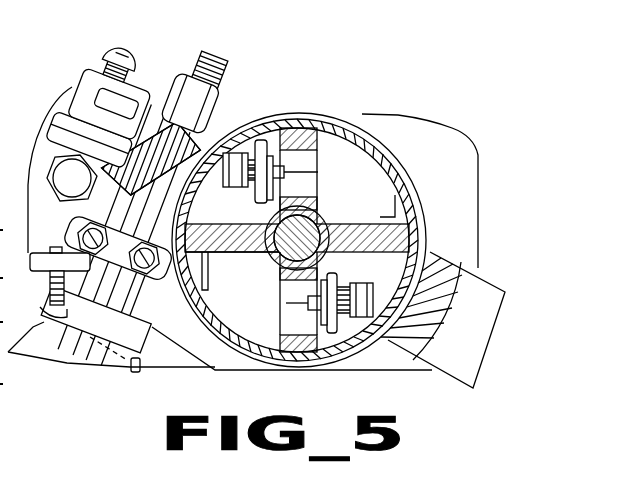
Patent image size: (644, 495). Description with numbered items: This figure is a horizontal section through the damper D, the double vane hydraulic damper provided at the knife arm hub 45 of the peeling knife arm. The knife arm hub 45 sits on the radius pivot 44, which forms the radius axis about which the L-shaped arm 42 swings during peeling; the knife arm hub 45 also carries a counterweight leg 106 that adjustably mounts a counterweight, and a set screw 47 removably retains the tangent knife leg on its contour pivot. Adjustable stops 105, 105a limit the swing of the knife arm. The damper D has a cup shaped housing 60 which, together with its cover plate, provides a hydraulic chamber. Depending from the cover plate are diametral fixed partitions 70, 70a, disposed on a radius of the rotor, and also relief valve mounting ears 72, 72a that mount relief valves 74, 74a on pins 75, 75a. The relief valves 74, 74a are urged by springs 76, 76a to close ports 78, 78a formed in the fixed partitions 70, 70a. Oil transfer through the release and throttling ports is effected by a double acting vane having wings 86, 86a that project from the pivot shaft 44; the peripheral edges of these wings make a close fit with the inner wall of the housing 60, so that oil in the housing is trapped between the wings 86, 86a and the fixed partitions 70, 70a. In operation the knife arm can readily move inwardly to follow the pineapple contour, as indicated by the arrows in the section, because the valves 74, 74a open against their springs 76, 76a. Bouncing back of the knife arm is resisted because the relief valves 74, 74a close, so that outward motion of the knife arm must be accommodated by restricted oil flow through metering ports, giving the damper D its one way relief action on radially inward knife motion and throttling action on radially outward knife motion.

The L-shaped arm 42 is at (80, 362).
The radius pivot 44 is at (307, 220).
The knife arm hub 45 is at (154, 91).
The set screw 47 is at (140, 363).
The cup shaped housing 60 is at (328, 122).
The fixed partition 70 is at (295, 352).
The fixed partition 70a is at (293, 125).
The relief valve mounting ear 72 is at (356, 292).
The relief valve mounting ear 72a is at (245, 183).
The relief valve 74 is at (333, 342).
The relief valve 74a is at (268, 135).
The pin 75 is at (286, 303).
The pin 75a is at (370, 187).
The spring 76 is at (342, 288).
The spring 76a is at (268, 205).
The port 78 is at (292, 327).
The port 78a is at (306, 153).
The wing 86 is at (387, 237).
The wing 86a is at (265, 257).
The adjustable stop 105 is at (78, 108).
The adjustable stop 105a is at (60, 250).
The counterweight leg 106 is at (476, 350).
The damper D is at (368, 121).